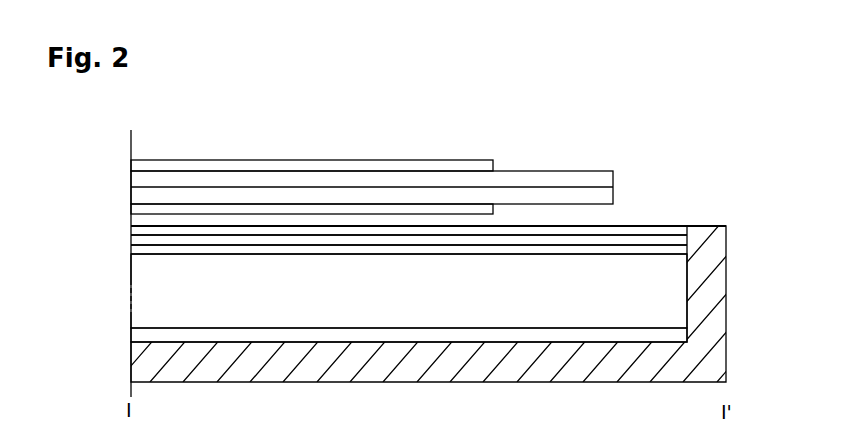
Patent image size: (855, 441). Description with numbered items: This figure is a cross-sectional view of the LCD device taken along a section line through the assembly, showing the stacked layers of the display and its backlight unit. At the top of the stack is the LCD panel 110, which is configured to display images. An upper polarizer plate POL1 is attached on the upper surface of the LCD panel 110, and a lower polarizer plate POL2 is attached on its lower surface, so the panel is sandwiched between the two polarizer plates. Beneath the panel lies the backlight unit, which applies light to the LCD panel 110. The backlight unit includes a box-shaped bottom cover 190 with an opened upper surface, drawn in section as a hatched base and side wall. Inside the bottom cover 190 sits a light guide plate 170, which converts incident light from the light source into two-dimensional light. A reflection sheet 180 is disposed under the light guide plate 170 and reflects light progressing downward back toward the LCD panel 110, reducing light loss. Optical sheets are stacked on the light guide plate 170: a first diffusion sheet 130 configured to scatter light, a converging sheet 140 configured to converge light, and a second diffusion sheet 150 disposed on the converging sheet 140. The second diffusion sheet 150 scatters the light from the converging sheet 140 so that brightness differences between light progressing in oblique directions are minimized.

The upper polarizer plate POL1 is at (253, 163).
The lower polarizer plate POL2 is at (406, 210).
The LCD panel 110 is at (567, 194).
The second diffusion sheet 150 is at (138, 231).
The converging sheet 140 is at (138, 238).
The first diffusion sheet 130 is at (138, 250).
The light guide plate 170 is at (138, 290).
The reflection sheet 180 is at (138, 335).
The bottom cover 190 is at (373, 382).